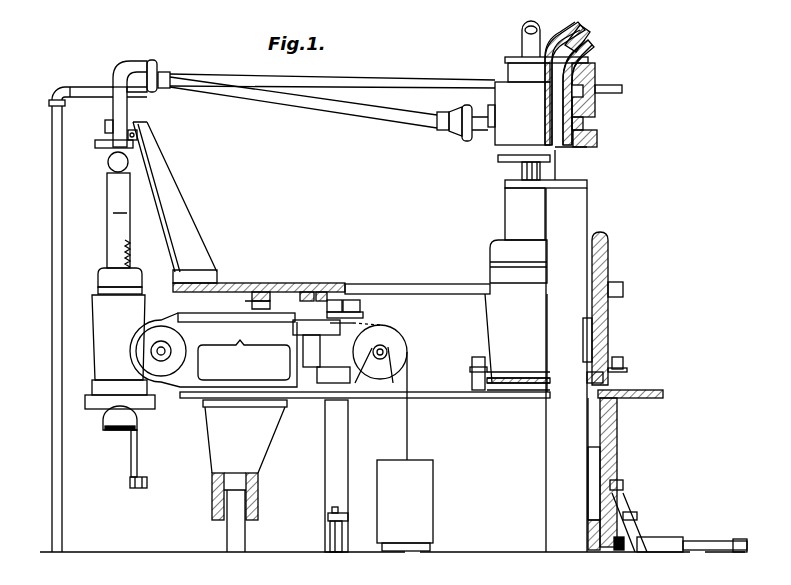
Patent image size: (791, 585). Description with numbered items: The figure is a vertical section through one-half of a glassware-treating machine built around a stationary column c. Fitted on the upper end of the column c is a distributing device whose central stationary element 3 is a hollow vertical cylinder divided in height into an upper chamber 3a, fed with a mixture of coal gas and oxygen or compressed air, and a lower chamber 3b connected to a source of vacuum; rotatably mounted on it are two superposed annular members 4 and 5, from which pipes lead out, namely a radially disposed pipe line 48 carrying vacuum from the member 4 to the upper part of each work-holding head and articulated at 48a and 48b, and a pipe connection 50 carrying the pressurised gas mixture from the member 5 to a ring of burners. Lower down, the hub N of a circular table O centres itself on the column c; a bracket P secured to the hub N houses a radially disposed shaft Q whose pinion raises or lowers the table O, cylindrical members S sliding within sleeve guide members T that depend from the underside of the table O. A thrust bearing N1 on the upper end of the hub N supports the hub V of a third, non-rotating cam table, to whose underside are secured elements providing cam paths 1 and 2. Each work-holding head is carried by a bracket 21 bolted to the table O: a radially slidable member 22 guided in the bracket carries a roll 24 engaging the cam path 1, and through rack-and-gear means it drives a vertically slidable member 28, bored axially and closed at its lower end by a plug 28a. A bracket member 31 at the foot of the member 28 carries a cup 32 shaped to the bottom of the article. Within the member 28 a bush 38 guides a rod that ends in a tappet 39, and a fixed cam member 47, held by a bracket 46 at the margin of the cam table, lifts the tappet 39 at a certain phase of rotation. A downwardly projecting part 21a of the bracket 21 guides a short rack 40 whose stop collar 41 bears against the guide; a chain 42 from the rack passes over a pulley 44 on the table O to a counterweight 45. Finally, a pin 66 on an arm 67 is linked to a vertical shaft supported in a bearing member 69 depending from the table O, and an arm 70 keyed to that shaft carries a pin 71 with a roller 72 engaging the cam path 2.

The cam path 1 is at (237, 283).
The cam path 2 is at (307, 292).
The central stationary element 3 is at (574, 181).
The upper chamber 3a is at (557, 119).
The lower chamber 3b is at (557, 172).
The annular member 4 is at (597, 111).
The annular member 5 is at (590, 86).
The bracket 21 is at (288, 386).
The downwardly projecting part 21a is at (190, 393).
The radially slidable member 22 is at (312, 330).
The roll 24 is at (262, 301).
The vertically slidable member 28 is at (110, 242).
The plug 28a is at (117, 431).
The bracket member 31 is at (90, 408).
The cup 32 is at (88, 401).
The bush 38 is at (95, 143).
The tappet 39 is at (105, 125).
The short rack 40 is at (131, 473).
The stop collar 41 is at (134, 489).
The chain 42 is at (355, 324).
The pulley 44 is at (407, 346).
The counterweight 45 is at (418, 499).
The bracket 46 is at (185, 228).
The fixed cam member 47 is at (137, 134).
The pipe line 48 is at (122, 116).
The articulation 48a is at (456, 140).
The articulation 48b is at (152, 68).
The pipe connection 50 is at (52, 192).
The pin 66 is at (332, 538).
The arm 67 is at (330, 513).
The bearing member 69 is at (333, 461).
The arm 70 is at (356, 312).
The pin 71 is at (333, 300).
The roller 72 is at (344, 312).
The hub N is at (443, 284).
The thrust bearing N1 is at (620, 373).
The circular table O is at (651, 398).
The bracket P is at (655, 545).
The shaft Q is at (702, 544).
The cylindrical member S is at (246, 537).
The sleeve guide member T is at (258, 497).
The hub V is at (605, 328).
The stationary column c is at (572, 215).